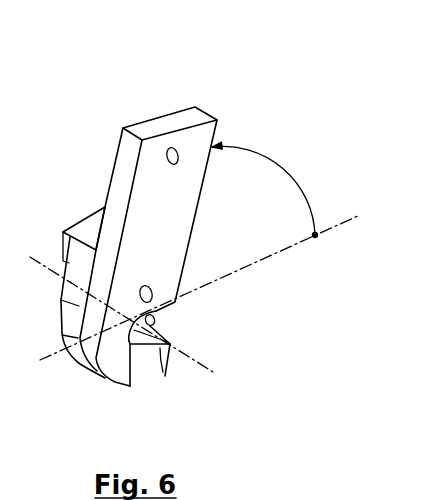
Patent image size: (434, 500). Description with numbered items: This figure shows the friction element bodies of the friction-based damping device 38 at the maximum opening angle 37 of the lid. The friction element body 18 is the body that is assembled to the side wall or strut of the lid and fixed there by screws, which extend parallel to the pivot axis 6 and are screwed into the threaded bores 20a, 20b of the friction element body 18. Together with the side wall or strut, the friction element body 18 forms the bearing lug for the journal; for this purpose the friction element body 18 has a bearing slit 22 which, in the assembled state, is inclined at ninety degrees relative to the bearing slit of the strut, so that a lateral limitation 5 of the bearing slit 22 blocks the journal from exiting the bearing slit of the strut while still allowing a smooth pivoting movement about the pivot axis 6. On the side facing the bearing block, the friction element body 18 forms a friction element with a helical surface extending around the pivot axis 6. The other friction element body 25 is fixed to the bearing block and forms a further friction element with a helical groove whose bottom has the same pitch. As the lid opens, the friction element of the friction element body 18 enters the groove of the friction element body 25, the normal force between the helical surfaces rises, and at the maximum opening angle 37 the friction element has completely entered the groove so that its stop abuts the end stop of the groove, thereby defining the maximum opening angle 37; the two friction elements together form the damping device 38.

The damping device 38 is at (236, 104).
The friction element body 18 is at (186, 204).
The threaded bore 20a is at (154, 291).
The threaded bore 20b is at (178, 152).
The friction element body 25 is at (91, 224).
The bearing slit 22 is at (158, 322).
The lateral limitation 5 is at (129, 389).
The pivot axis 6 is at (174, 378).
The maximum opening angle 37 is at (283, 173).